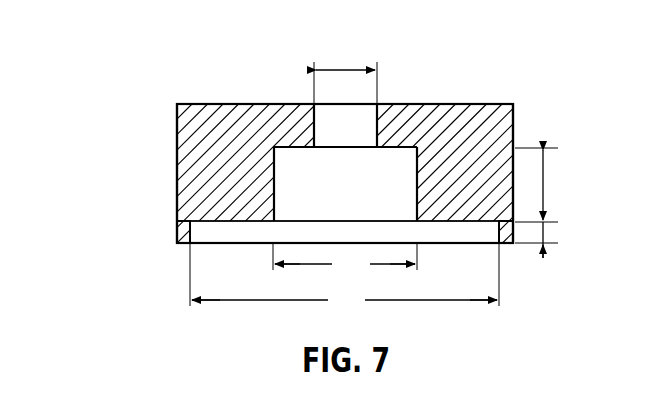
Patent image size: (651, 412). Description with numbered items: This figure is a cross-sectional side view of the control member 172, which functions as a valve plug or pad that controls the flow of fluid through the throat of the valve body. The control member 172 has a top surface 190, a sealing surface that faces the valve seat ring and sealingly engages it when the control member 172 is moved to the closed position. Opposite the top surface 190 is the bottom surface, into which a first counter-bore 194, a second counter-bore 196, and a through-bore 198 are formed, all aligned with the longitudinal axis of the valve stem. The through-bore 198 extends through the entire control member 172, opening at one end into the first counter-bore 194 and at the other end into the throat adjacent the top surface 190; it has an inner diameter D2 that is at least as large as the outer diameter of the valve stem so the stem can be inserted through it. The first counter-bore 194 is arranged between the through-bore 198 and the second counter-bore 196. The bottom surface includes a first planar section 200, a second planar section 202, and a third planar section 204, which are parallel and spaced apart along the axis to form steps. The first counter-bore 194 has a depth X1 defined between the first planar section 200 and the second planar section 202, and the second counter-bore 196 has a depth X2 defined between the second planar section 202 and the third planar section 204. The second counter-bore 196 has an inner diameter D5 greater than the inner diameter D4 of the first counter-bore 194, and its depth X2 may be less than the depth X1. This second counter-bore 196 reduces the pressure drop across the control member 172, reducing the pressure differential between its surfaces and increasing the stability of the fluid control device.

The control member 172 is at (150, 112).
The top surface 190 is at (225, 85).
The through-bore 198 is at (365, 121).
The first planar section 200 is at (293, 147).
The first counter-bore 194 is at (293, 205).
The second counter-bore 196 is at (213, 232).
The third planar section 204 is at (187, 245).
The second planar section 202 is at (457, 223).
The inner diameter of the through-bore D2 is at (345, 75).
The inner diameter of the first counter-bore D4 is at (345, 260).
The inner diameter of the second counter-bore D5 is at (344, 278).
The depth of the first counter-bore X1 is at (543, 180).
The depth of the second counter-bore X2 is at (543, 232).